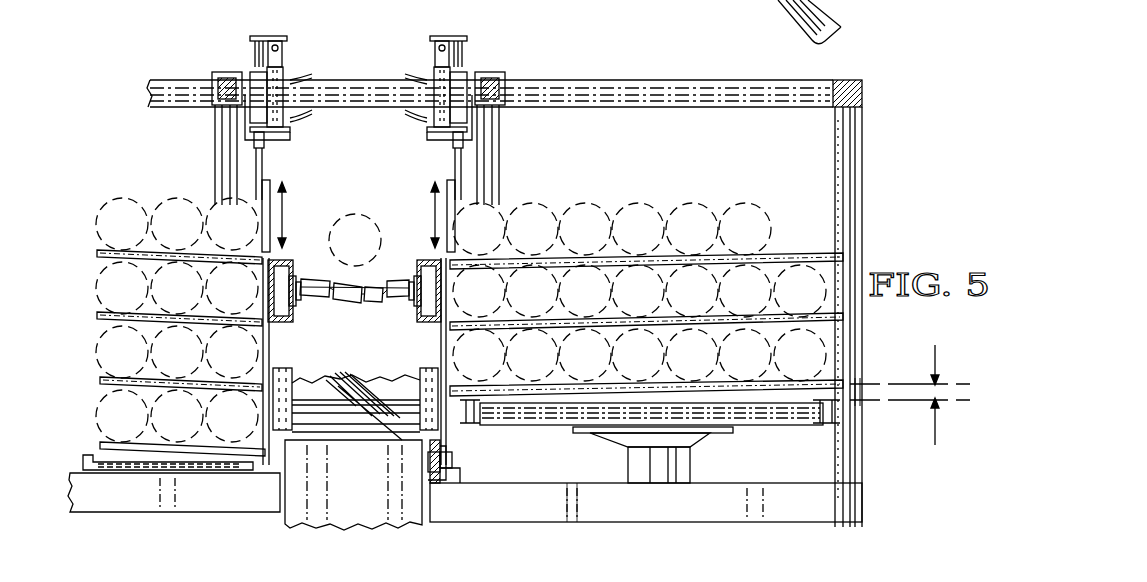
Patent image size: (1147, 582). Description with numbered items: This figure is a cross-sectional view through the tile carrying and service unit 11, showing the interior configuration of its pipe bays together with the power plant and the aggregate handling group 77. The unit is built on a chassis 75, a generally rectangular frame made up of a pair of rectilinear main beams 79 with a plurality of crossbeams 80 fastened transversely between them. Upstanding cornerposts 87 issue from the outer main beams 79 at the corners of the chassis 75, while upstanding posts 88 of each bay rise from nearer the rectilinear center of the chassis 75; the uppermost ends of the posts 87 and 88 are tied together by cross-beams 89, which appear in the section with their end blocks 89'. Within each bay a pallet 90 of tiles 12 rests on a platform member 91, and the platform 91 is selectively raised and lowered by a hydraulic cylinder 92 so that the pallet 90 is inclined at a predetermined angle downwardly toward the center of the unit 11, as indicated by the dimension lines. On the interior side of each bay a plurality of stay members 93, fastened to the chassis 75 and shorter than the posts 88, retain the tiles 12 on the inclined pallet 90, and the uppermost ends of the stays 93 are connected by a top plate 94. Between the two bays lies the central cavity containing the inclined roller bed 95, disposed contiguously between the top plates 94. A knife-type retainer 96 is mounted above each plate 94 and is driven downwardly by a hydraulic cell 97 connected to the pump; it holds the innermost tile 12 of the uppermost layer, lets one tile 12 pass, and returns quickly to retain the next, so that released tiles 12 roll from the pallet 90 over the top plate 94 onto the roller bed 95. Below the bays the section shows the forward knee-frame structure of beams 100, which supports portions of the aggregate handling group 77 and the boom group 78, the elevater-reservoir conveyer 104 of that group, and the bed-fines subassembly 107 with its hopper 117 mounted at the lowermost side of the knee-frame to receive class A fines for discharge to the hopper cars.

The tile carrying and service unit 11 is at (366, 166).
The tile 12 is at (753, 212).
The chassis 75 is at (864, 497).
The aggregate handling group 77 is at (360, 425).
The boom group 78 is at (452, 468).
The main beam 79 is at (812, 512).
The crossbeam 80 is at (598, 510).
The cornerpost 87 is at (850, 172).
The upstanding post 88 is at (228, 155).
The cross-beam 89 is at (532, 83).
The clamp block 89' is at (364, 77).
The pallet 90 is at (848, 406).
The platform member 91 is at (106, 462).
The hydraulic cylinder 92 is at (640, 470).
The stay member 93 is at (270, 353).
The top plate 94 is at (290, 261).
The inclined roller bed 95 is at (338, 298).
The knife-type retainer 96 is at (256, 62).
The hydraulic cell 97 is at (298, 79).
The beams 100 is at (448, 470).
The elevater-reservoir conveyer 104 is at (355, 394).
The bed-fines subassembly 107 is at (366, 483).
The hopper 117 is at (416, 516).